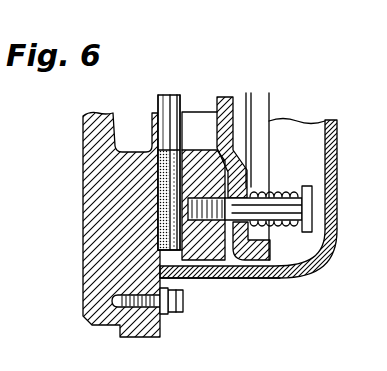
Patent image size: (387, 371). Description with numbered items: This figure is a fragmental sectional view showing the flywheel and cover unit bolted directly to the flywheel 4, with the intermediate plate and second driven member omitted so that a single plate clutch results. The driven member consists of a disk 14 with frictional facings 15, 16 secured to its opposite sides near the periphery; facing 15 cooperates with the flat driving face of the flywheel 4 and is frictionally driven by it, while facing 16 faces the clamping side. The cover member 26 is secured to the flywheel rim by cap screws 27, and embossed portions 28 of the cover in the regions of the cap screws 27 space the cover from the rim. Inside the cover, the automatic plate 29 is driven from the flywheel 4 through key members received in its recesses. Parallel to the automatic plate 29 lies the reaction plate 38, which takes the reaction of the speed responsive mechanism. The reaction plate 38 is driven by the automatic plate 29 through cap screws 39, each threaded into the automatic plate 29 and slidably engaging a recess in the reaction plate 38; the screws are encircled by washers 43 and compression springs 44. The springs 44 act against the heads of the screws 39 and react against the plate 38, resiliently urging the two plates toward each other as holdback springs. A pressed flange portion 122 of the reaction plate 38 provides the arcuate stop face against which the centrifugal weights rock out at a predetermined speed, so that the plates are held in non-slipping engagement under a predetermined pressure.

The flywheel 4 is at (86, 131).
The disk 14 is at (111, 169).
The facing 15 is at (164, 181).
The facing 16 is at (171, 201).
The cover member 26 is at (332, 183).
The cap screw 27 is at (183, 305).
The embossed portion 28 is at (163, 312).
The automatic plate 29 is at (200, 249).
The reaction plate 38 is at (231, 103).
The cap screw 39 is at (313, 200).
The washer 43 is at (265, 186).
The compression spring 44 is at (272, 230).
The pressed flange portion 122 is at (259, 266).